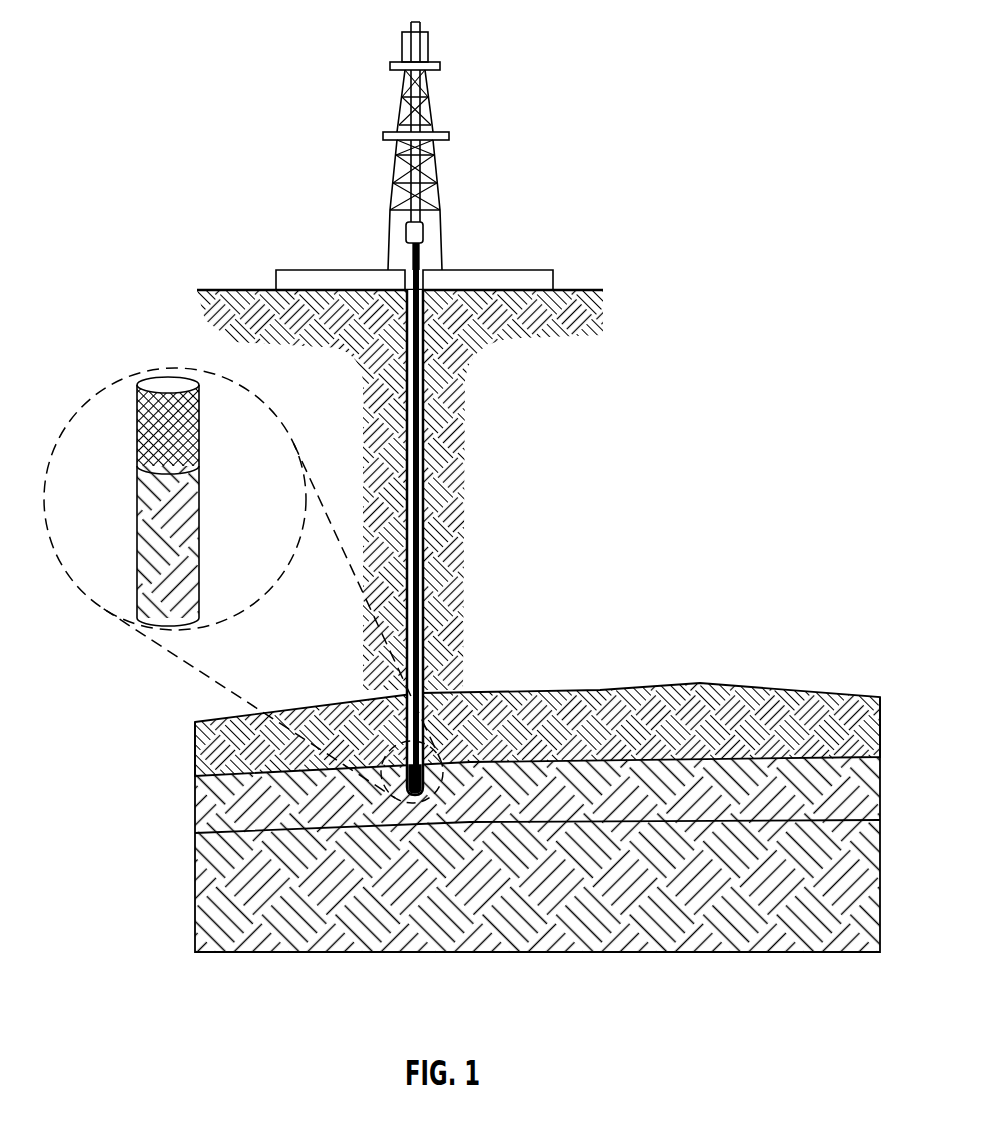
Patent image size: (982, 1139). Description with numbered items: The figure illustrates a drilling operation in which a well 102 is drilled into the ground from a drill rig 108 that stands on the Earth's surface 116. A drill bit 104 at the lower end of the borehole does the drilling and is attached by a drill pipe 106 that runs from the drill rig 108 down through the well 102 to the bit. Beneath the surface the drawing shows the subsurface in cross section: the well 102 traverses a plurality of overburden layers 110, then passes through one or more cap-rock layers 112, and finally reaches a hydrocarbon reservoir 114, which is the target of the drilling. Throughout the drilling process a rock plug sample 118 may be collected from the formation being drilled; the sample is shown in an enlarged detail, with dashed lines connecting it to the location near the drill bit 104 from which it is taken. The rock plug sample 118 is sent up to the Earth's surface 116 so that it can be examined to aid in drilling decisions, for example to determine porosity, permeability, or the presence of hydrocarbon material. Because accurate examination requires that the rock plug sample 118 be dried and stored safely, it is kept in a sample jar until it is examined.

The well 102 is at (403, 430).
The drill bit 104 is at (440, 757).
The drill pipe 106 is at (420, 522).
The drill rig 108 is at (438, 163).
The overburden layers 110 is at (455, 422).
The cap-rock layers 112 is at (196, 752).
The hydrocarbon reservoir 114 is at (196, 815).
The Earth's surface 116 is at (590, 290).
The rock plug sample 118 is at (148, 555).